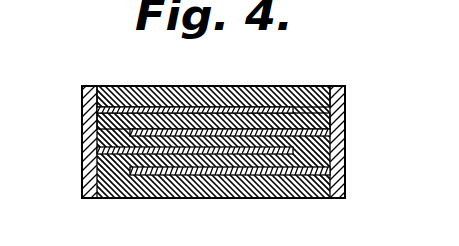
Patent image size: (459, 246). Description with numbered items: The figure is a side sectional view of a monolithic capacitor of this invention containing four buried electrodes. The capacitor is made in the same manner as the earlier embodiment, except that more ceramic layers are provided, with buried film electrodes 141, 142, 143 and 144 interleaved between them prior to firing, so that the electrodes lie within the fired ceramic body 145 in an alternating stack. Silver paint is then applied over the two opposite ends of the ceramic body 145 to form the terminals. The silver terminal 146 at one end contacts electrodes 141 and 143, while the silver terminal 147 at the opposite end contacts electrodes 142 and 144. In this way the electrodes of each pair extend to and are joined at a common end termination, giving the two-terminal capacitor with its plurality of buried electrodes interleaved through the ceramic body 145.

The buried electrode 141 is at (138, 68).
The buried electrode 142 is at (219, 128).
The buried electrode 143 is at (126, 147).
The buried electrode 144 is at (258, 170).
The ceramic body 145 is at (292, 86).
The silver terminal 146 is at (82, 107).
The silver terminal 147 is at (343, 143).